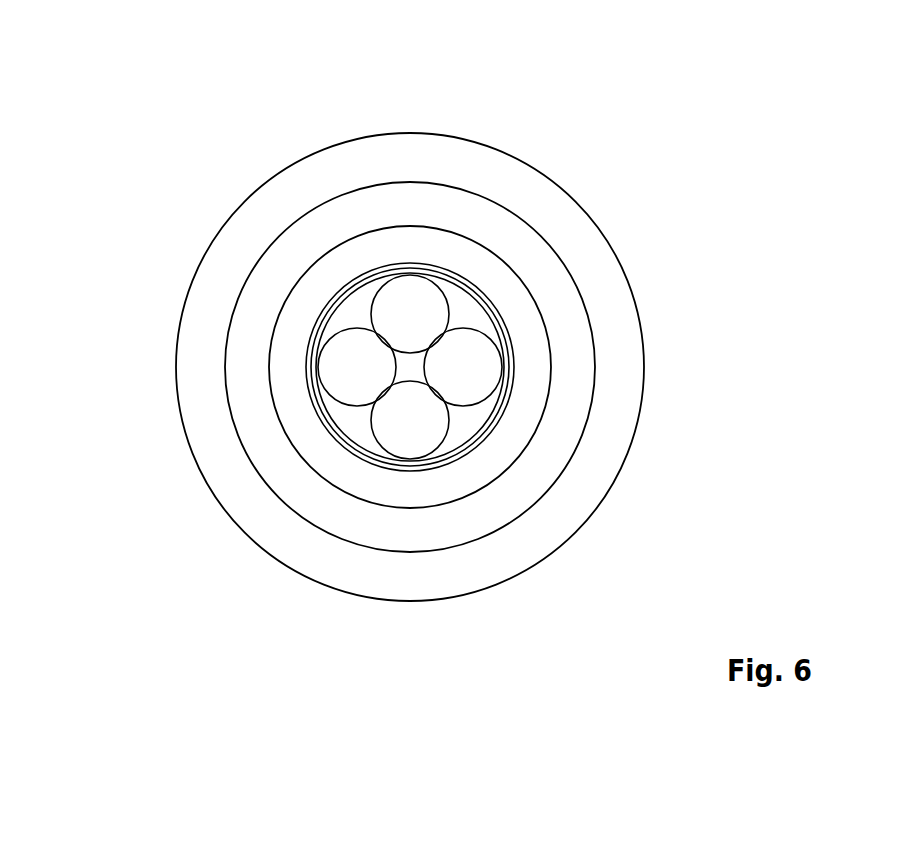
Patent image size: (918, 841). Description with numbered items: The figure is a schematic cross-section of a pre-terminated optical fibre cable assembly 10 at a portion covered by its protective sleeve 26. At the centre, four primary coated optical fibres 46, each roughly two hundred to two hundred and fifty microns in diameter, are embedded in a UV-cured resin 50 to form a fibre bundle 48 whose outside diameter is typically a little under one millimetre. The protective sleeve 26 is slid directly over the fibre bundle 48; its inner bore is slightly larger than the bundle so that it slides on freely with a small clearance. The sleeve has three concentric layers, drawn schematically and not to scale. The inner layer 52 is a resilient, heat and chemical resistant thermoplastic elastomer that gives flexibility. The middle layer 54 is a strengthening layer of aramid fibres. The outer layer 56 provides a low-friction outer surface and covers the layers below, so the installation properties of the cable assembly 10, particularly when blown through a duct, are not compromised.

The pre-terminated optical fibre cable assembly 10 is at (636, 172).
The protective sleeve 26 is at (278, 562).
The primary coated optical fibres 46 is at (412, 288).
The fibre bundle 48 is at (488, 442).
The UV-cured resin 50 is at (343, 423).
The inner layer 52 is at (535, 348).
The middle layer 54 is at (388, 205).
The outer layer 56 is at (192, 392).